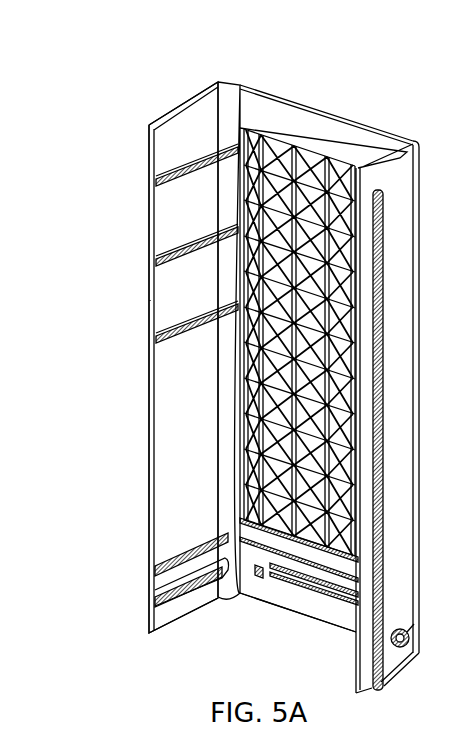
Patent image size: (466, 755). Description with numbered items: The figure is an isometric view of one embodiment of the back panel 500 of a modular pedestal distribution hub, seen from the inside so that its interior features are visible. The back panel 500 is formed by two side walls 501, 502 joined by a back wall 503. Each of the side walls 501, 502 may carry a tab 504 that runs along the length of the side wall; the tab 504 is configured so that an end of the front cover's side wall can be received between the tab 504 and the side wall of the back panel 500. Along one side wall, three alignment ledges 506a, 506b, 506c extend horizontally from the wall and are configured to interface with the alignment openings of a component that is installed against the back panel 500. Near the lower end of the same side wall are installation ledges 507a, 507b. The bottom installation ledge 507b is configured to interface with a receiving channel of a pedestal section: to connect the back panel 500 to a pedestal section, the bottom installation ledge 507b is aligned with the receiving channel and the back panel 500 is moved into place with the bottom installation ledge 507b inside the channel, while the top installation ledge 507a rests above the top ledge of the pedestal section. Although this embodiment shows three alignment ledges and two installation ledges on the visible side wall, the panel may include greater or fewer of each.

The back panel 500 is at (322, 81).
The side wall 501 is at (168, 537).
The side wall 502 is at (397, 665).
The back wall 503 is at (275, 596).
The tab 504 is at (385, 478).
The alignment ledge 506a is at (160, 182).
The alignment ledge 506b is at (160, 262).
The alignment ledge 506c is at (160, 340).
The top installation ledge 507a is at (150, 570).
The bottom installation ledge 507b is at (150, 598).